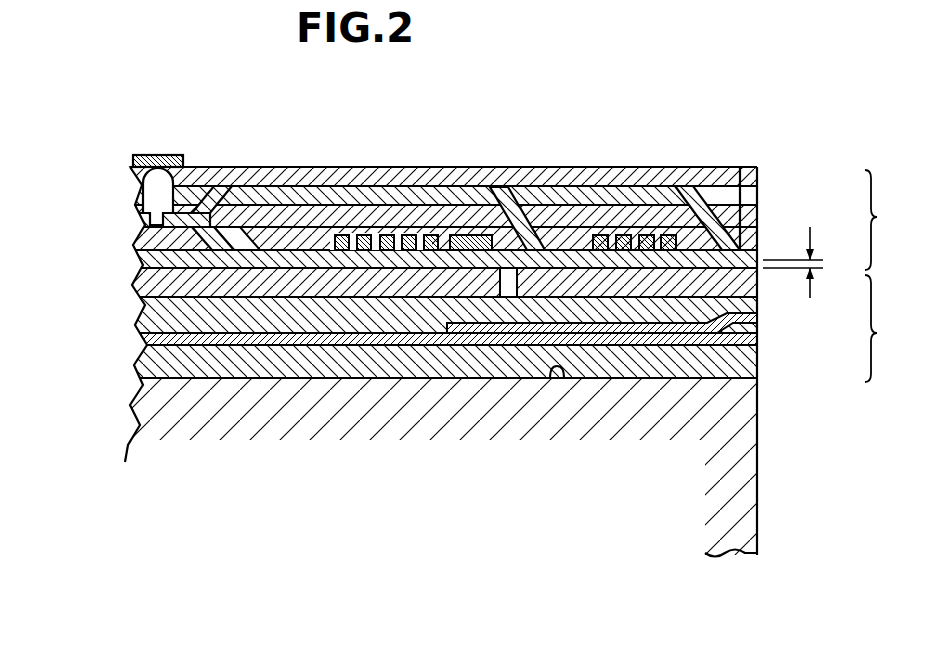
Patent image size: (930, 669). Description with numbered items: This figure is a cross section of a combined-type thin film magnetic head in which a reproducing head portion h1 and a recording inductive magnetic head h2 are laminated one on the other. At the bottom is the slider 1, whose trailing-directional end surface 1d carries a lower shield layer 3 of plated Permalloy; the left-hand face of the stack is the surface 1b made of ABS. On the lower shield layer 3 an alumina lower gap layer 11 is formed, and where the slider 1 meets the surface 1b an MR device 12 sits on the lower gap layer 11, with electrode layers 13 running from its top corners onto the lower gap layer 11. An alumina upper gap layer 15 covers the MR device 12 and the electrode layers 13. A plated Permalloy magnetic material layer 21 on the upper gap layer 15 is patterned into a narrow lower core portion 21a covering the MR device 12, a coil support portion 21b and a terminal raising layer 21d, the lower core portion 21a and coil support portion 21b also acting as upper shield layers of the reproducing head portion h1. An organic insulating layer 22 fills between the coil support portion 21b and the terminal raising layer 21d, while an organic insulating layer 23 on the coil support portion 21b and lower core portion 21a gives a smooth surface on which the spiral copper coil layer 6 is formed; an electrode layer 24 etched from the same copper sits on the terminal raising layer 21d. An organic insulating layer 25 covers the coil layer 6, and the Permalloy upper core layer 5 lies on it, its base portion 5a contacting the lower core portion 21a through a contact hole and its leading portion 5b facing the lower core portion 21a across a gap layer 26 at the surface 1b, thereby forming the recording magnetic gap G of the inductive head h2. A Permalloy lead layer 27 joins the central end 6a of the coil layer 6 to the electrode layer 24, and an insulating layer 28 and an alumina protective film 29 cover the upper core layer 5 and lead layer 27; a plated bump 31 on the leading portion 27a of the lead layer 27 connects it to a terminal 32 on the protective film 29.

The slider 1 is at (760, 490).
The surface made of ABS 1b is at (760, 418).
The trailing-directional end surface 1d is at (560, 377).
The lower shield layer 3 is at (440, 360).
The upper core layer 5 is at (572, 200).
The base portion 5a is at (550, 225).
The leading portion 5b is at (743, 158).
The coil layer 6 is at (400, 200).
The central end 6a is at (487, 240).
The lower gap layer 11 is at (380, 337).
The MR device 12 is at (757, 330).
The electrode layers 13 is at (612, 328).
The upper gap layer 15 is at (360, 315).
The magnetic material layer 21 is at (287, 298).
The lower core portion 21a is at (657, 290).
The coil support portion 21b is at (323, 300).
The terminal raising layer 21d is at (158, 300).
The organic insulating layer 22 is at (235, 290).
The organic insulating layer 23 is at (347, 167).
The electrode layer 24 is at (145, 264).
The organic insulating layer 25 is at (277, 230).
The gap layer 26 is at (757, 287).
The lead layer 27 is at (468, 220).
The leading portion 27a is at (142, 222).
The insulating layer 28 is at (210, 168).
The protective film 29 is at (380, 170).
The bump 31 is at (148, 198).
The terminal 32 is at (150, 156).
The recording magnetic gap G is at (803, 262).
The reproducing head portion h1 is at (890, 328).
The recording inductive magnetic head h2 is at (890, 220).